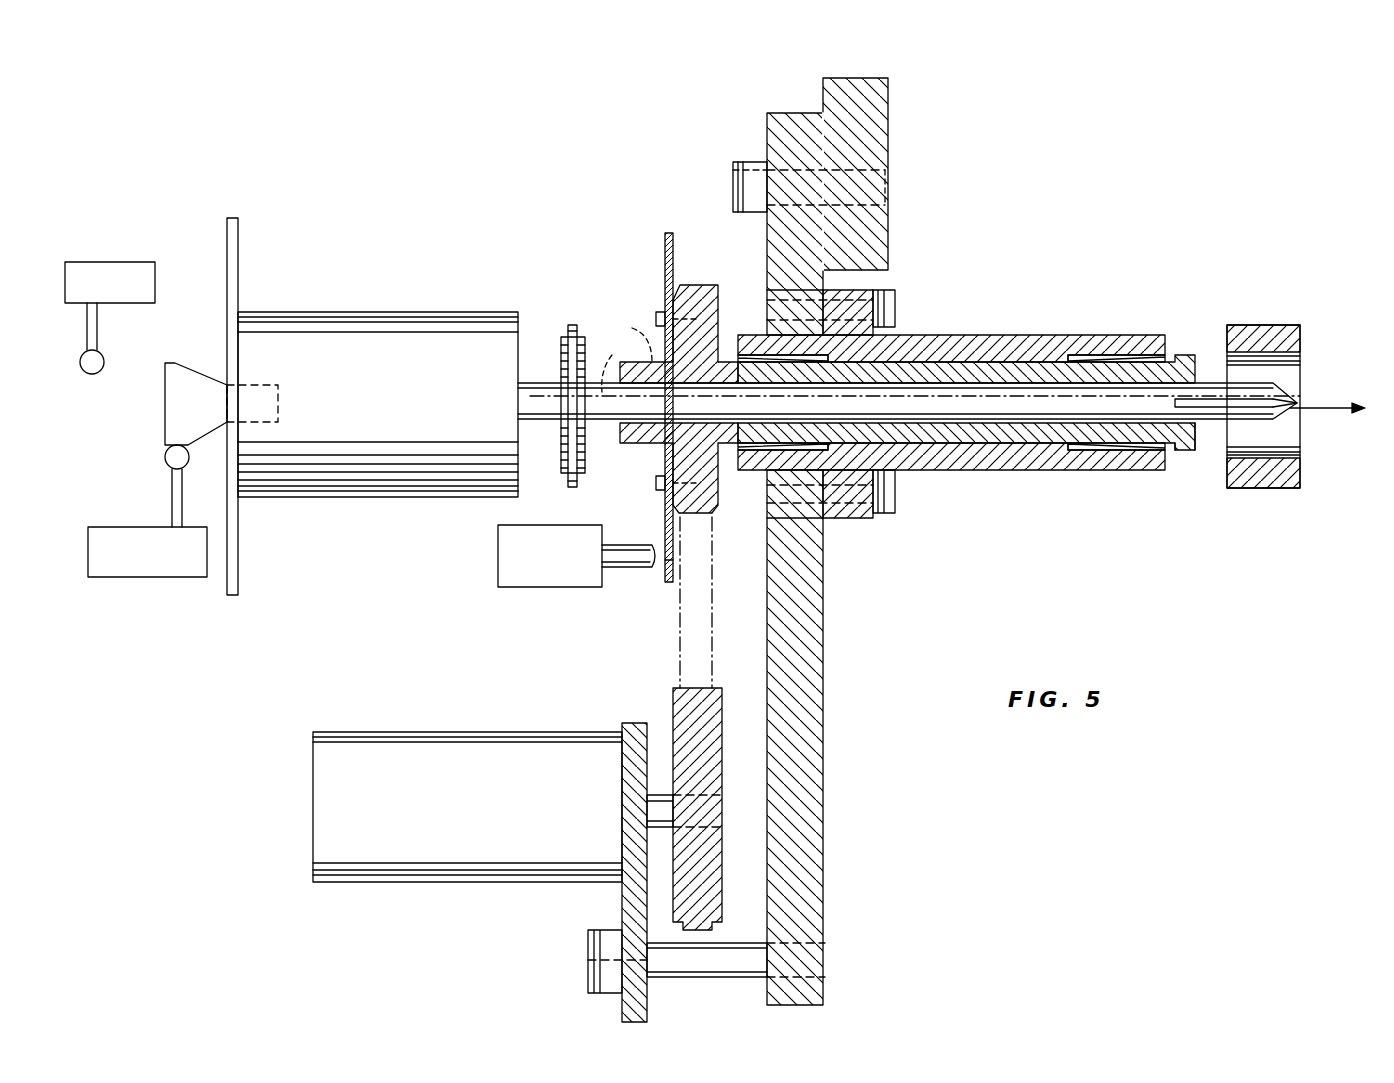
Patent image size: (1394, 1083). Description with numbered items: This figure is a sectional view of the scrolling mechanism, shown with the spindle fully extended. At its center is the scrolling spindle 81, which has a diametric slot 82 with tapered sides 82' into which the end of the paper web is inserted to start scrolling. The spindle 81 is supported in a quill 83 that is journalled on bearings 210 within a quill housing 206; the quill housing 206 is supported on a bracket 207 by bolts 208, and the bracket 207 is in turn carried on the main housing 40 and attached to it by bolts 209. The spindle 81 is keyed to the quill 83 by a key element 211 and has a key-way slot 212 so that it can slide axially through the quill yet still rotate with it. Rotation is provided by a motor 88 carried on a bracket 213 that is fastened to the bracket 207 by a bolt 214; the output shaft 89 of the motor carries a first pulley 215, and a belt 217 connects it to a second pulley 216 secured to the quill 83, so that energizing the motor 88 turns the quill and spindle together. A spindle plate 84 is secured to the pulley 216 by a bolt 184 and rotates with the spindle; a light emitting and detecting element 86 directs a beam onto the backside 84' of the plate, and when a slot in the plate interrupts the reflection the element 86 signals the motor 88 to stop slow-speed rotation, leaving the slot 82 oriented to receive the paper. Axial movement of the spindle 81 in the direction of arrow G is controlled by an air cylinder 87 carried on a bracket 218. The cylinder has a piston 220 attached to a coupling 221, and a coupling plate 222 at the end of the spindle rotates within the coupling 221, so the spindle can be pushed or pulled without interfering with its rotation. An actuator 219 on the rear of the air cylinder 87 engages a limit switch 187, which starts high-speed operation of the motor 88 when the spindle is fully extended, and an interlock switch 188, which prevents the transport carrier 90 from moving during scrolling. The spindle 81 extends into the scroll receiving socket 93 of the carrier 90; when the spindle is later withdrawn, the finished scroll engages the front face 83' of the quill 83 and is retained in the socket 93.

The main housing 40 is at (885, 140).
The scrolling spindle 81 is at (1212, 435).
The slot 82 is at (1224, 369).
The tapered sides 82' is at (1316, 392).
The quill 83 is at (966, 380).
The front face 83' is at (1185, 476).
The spindle plate 84 is at (642, 392).
The backside 84' is at (638, 588).
The light emitting and detecting element 86 is at (498, 558).
The air cylinder 87 is at (400, 325).
The motor 88 is at (425, 745).
The output shaft 89 is at (650, 795).
The transport carrier 90 is at (1275, 332).
The scroll receiving socket 93 is at (1300, 362).
The arrow G is at (1308, 415).
The bolt 184 is at (660, 312).
The limit switch 187 is at (118, 568).
The interlock switch 188 is at (125, 272).
The quill housing 206 is at (985, 313).
The bracket 207 is at (822, 625).
The bolts 208 is at (900, 310).
The bolts 209 is at (733, 182).
The bearings 210 is at (740, 357).
The key element 211 is at (625, 336).
The key-way slot 212 is at (611, 364).
The bracket 213 is at (622, 908).
The bolt 214 is at (588, 962).
The first pulley 215 is at (755, 675).
The second pulley 216 is at (692, 296).
The belt 217 is at (680, 652).
The bracket 218 is at (238, 578).
The actuator 219 is at (190, 372).
The piston 220 is at (527, 382).
The coupling 221 is at (565, 487).
The coupling plate 222 is at (583, 337).